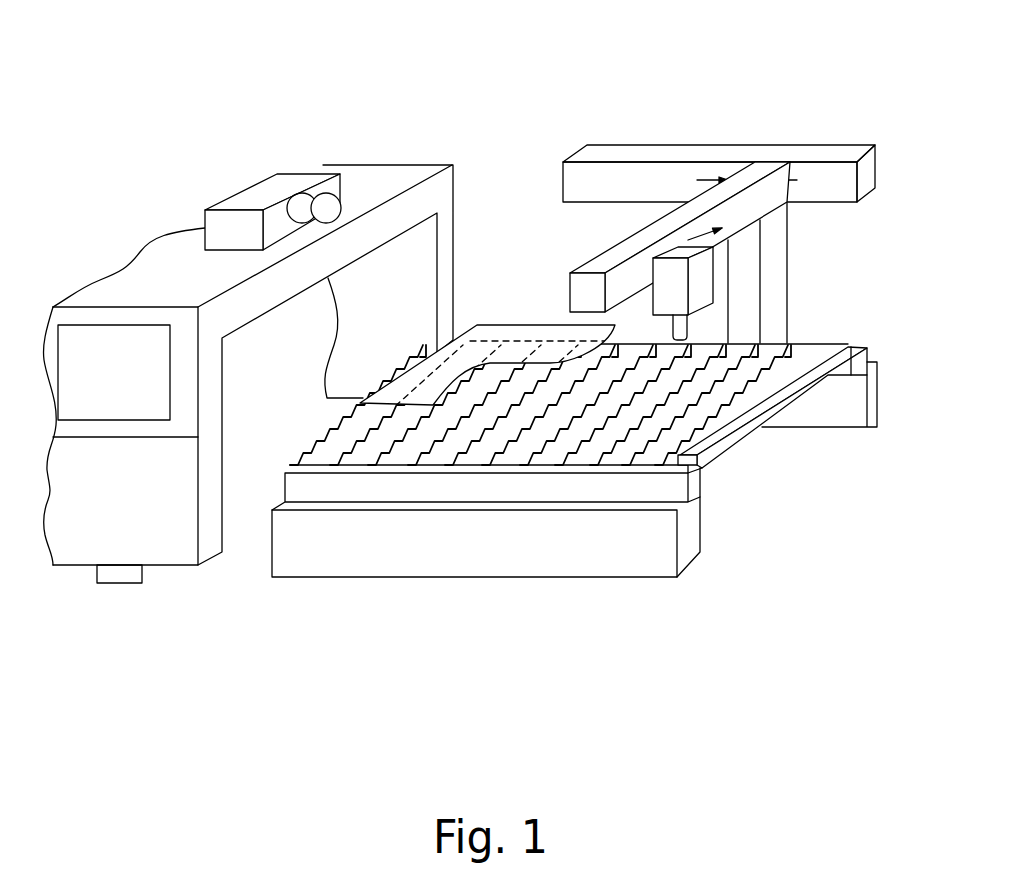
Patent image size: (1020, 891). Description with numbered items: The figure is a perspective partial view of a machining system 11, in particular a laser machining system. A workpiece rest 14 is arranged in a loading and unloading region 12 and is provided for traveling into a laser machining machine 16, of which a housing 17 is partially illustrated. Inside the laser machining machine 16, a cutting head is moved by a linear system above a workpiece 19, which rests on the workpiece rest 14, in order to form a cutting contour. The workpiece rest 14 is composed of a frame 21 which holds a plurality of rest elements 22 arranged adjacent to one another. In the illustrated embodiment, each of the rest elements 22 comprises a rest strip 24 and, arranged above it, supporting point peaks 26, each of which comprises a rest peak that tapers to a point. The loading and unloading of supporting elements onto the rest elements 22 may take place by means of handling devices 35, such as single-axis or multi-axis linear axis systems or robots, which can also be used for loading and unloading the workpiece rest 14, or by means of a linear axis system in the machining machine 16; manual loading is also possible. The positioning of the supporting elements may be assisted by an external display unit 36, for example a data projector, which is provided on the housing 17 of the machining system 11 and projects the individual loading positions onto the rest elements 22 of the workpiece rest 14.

The machining system 11 is at (471, 245).
The loading and unloading region 12 is at (555, 580).
The workpiece rest 14 is at (803, 331).
The laser machining machine 16 is at (352, 153).
The housing 17 is at (387, 188).
The workpiece 19 is at (528, 337).
The frame 21 is at (665, 484).
The rest elements 22 is at (313, 470).
The rest strip 24 is at (408, 447).
The supporting point peaks 26 is at (413, 427).
The handling devices 35 is at (703, 129).
The external display unit 36 is at (288, 180).